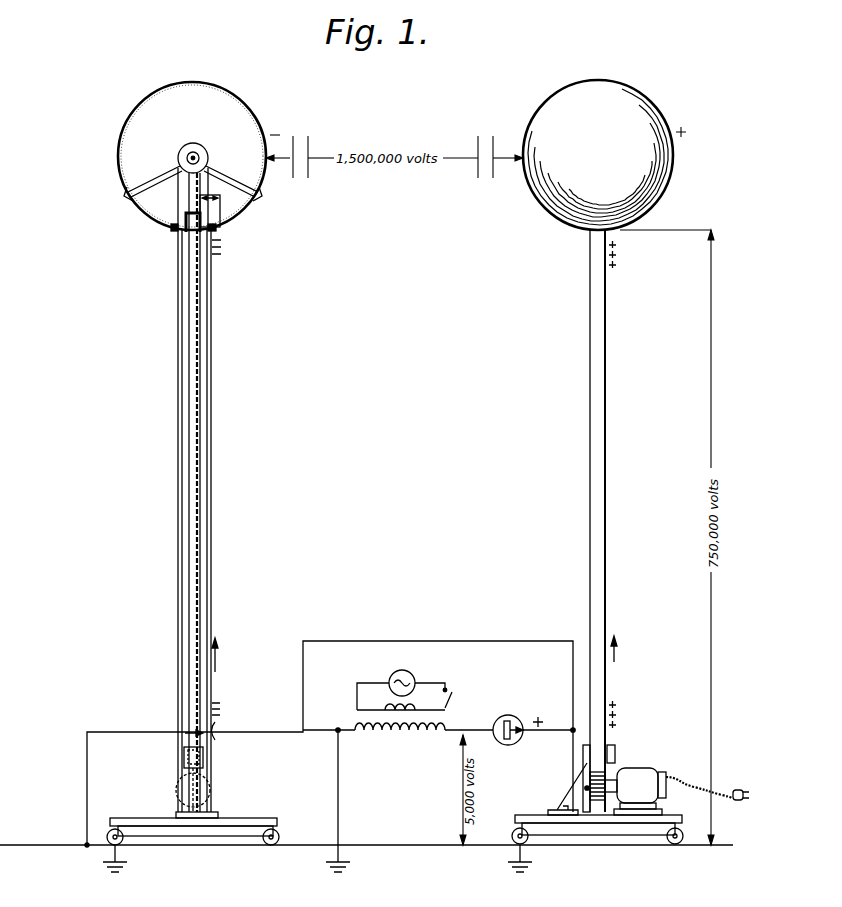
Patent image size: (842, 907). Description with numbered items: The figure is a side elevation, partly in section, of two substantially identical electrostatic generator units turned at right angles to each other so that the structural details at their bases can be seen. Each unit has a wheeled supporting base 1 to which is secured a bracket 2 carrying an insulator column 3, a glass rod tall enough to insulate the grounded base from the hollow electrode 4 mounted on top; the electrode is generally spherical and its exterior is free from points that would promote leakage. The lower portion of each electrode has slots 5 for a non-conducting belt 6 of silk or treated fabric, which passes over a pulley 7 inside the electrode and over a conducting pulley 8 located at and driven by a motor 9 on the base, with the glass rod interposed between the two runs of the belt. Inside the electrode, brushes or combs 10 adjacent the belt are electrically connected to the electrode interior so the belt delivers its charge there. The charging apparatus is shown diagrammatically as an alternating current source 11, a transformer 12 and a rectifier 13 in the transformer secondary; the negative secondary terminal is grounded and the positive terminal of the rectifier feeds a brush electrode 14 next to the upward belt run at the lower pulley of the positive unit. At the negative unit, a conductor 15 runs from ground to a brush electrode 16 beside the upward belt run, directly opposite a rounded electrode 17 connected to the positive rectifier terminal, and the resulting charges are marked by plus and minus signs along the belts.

The wheeled supporting base 1 is at (264, 818).
The bracket 2 is at (184, 770).
The insulator column 3 is at (201, 492).
The hollow electrode 4 is at (240, 114).
The slot 5 is at (174, 232).
The non-conducting belt 6 is at (178, 542).
The pulley 7 is at (205, 150).
The conducting pulley 8 is at (178, 790).
The motor 9 is at (212, 790).
The brushes or combs 10 is at (222, 212).
The alternating current source 11 is at (414, 672).
The transformer 12 is at (370, 718).
The rectifier 13 is at (510, 716).
The brush electrode 14 is at (587, 788).
The conductor 15 is at (87, 783).
The brush electrode 16 is at (200, 733).
The rounded electrode 17 is at (218, 740).